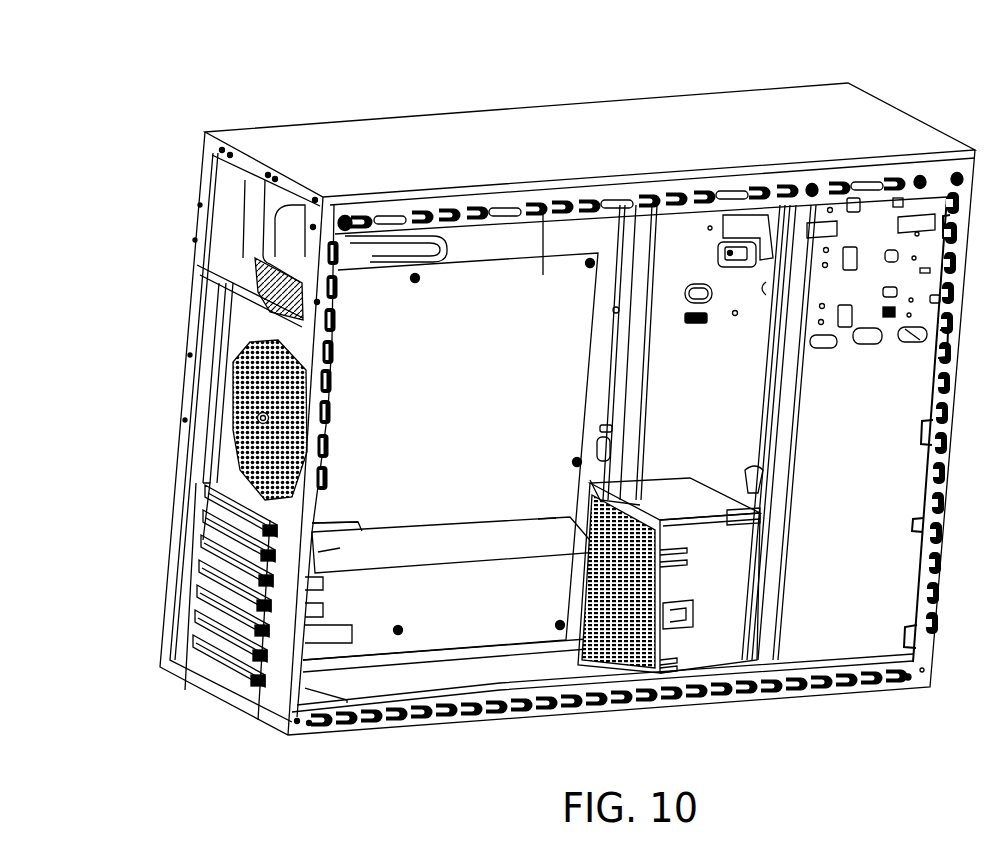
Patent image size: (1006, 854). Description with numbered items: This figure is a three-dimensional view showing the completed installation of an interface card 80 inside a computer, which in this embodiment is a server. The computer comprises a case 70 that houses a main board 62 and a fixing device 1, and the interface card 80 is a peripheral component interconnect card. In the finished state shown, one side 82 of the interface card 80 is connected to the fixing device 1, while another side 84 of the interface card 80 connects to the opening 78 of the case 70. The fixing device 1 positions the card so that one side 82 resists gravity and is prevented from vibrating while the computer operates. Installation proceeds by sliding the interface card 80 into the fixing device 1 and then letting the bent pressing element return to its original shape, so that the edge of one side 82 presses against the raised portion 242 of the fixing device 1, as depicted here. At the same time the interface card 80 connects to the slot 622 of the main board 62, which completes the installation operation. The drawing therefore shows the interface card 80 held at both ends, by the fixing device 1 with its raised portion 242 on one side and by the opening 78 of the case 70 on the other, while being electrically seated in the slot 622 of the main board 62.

The fixing device 1 is at (713, 660).
The main board 62 is at (543, 275).
The slot 622 is at (350, 522).
The case 70 is at (496, 121).
The opening 78 is at (203, 493).
The interface card 80 is at (487, 530).
The one side 82 is at (545, 523).
The another side 84 is at (325, 555).
The raised portion 242 is at (630, 522).